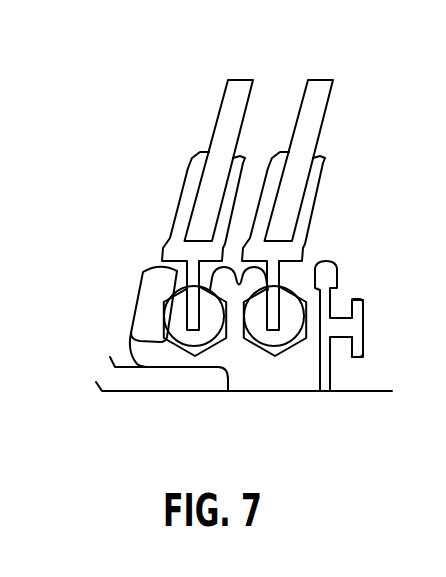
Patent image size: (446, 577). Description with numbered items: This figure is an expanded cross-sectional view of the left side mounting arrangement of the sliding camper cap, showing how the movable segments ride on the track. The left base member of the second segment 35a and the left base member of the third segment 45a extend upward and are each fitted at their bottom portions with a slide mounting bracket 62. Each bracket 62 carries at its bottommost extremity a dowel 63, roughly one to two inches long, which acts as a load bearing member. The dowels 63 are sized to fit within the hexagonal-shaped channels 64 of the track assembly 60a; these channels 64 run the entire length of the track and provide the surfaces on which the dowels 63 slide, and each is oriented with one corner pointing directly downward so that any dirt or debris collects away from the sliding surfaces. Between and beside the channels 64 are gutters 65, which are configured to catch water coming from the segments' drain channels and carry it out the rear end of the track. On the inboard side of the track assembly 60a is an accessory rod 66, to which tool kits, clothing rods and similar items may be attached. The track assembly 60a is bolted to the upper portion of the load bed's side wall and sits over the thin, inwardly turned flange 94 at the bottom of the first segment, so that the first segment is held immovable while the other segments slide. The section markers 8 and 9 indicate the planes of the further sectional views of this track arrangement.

The left base member of the second segment 35a is at (233, 107).
The left base member of the third segment 45a is at (313, 107).
The slide mounting bracket 62 is at (196, 160).
The dowel 63 is at (173, 293).
The hexagonal-shaped channel 64 is at (163, 337).
The gutter 65 is at (250, 264).
The accessory rod 66 is at (360, 337).
The inwardly turned flange 94 is at (135, 383).
The track assembly 60a is at (308, 373).
The section line 8- 8 is at (63, 316).
The section line 9- 9 is at (253, 30).